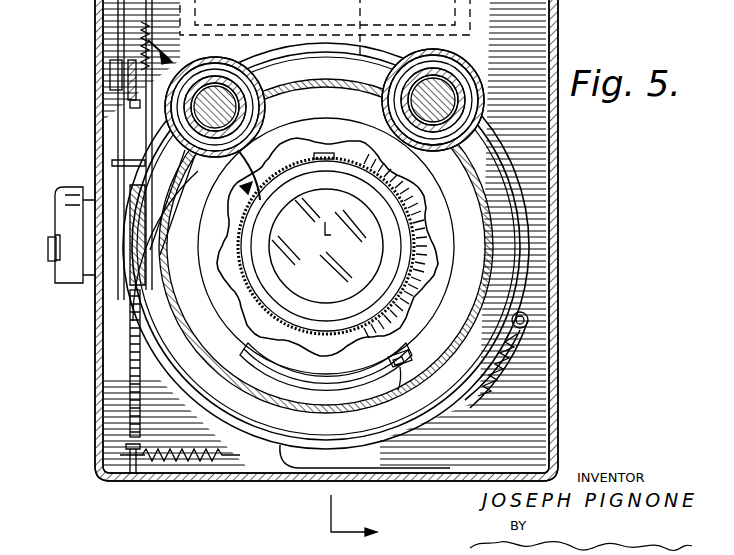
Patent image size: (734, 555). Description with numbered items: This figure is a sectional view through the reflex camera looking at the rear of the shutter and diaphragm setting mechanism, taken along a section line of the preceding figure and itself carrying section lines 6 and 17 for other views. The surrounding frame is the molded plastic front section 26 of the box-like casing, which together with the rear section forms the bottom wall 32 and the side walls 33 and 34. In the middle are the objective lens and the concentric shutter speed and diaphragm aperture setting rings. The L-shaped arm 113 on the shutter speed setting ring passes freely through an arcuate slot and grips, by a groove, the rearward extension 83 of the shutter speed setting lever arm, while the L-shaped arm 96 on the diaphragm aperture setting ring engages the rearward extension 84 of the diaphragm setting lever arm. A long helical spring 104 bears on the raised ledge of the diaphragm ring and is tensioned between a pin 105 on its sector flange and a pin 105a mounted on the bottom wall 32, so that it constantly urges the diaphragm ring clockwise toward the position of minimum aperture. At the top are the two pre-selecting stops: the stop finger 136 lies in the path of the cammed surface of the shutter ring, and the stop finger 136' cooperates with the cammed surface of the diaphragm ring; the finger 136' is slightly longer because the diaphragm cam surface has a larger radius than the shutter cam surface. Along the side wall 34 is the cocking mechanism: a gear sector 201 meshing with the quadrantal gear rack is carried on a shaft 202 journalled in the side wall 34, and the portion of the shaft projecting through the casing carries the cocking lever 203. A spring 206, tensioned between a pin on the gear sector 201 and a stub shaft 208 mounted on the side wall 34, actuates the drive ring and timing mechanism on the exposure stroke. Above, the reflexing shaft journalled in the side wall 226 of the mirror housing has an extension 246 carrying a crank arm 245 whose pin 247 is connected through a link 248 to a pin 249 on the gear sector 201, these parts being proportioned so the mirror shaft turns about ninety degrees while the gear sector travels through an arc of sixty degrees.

The section line 6 is at (362, 519).
The section line 17 is at (210, 112).
The front section 26 is at (596, 0).
The bottom wall 32 is at (300, 481).
The side wall 33 is at (558, 405).
The side wall 34 is at (95, 362).
The rearward extension 83 is at (245, 128).
The rearward extension 84 is at (405, 350).
The L-shaped arm 96 is at (398, 390).
The long helical spring 104 is at (525, 362).
The pin 105 is at (528, 316).
The pin 105a is at (110, 480).
The L-shaped arm 113 is at (300, 150).
The stop finger 136 is at (207, 131).
The stop finger 136' is at (459, 100).
The gear sector 201 is at (132, 402).
The shaft 202 is at (60, 232).
The cocking lever 203 is at (62, 270).
The spring 206 is at (105, 150).
The stub shaft 208 is at (100, 48).
The side wall 226 is at (553, 30).
The crank arm 245 is at (126, 110).
The extension 246 is at (106, 92).
The pin 247 is at (105, 122).
The link 248 is at (130, 168).
The pin 249 is at (130, 295).